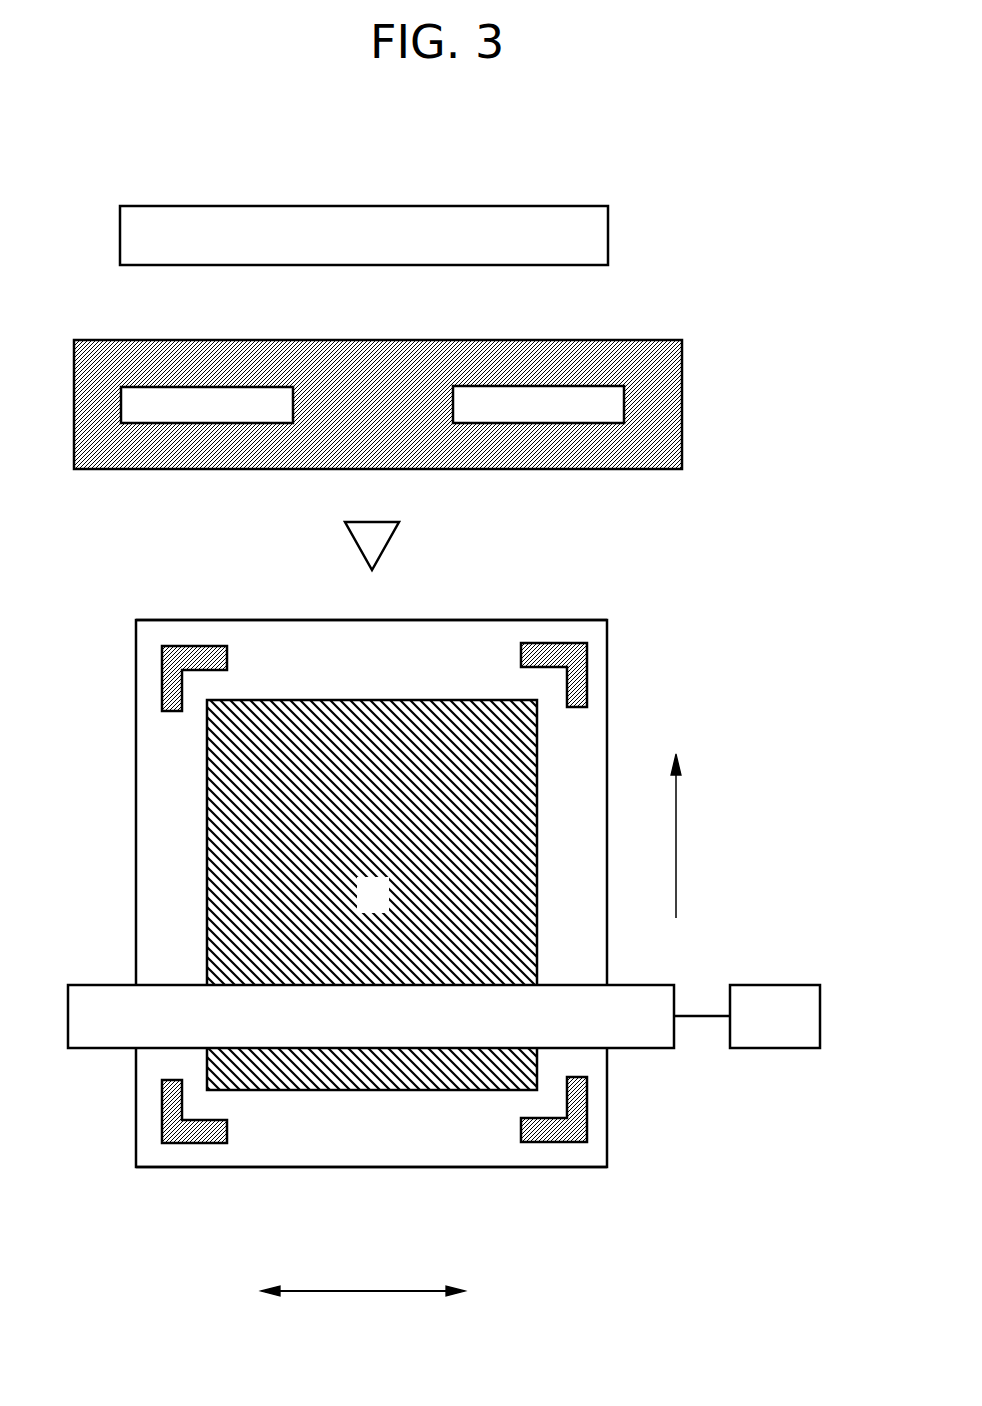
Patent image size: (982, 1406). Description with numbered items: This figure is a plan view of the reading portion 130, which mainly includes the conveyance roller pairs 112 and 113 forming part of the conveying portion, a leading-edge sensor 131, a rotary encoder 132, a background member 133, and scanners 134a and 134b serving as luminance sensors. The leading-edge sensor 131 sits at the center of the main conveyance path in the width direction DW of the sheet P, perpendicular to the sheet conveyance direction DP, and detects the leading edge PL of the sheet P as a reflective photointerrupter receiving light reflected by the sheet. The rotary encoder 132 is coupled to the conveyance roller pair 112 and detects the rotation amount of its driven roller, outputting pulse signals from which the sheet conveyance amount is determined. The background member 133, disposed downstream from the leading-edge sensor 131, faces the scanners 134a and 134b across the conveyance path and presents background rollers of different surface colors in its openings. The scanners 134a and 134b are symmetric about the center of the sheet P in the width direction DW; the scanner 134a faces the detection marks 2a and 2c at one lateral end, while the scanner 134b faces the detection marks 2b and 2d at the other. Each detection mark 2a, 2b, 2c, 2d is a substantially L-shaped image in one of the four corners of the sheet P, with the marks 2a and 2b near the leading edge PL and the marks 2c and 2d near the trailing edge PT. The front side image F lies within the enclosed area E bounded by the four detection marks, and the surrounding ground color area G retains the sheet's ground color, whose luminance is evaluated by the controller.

The reading portion 130 is at (647, 200).
The conveyance roller pair 113 is at (191, 205).
The background member 133 is at (682, 414).
The scanner 134a is at (205, 386).
The scanner 134b is at (533, 386).
The leading-edge sensor 131 is at (392, 540).
The conveyance roller pair 112 is at (107, 982).
The rotary encoder 132 is at (755, 983).
The detection mark 2a is at (162, 670).
The detection mark 2b is at (587, 663).
The detection mark 2c is at (162, 1108).
The detection mark 2d is at (587, 1100).
The ground color area G is at (206, 633).
The leading edge PL is at (269, 620).
The trailing edge PT is at (278, 1168).
The sheet P is at (136, 834).
The enclosed area E is at (207, 775).
The front side image F is at (373, 895).
The sheet conveyance direction DP is at (693, 836).
The width direction DW is at (363, 1309).